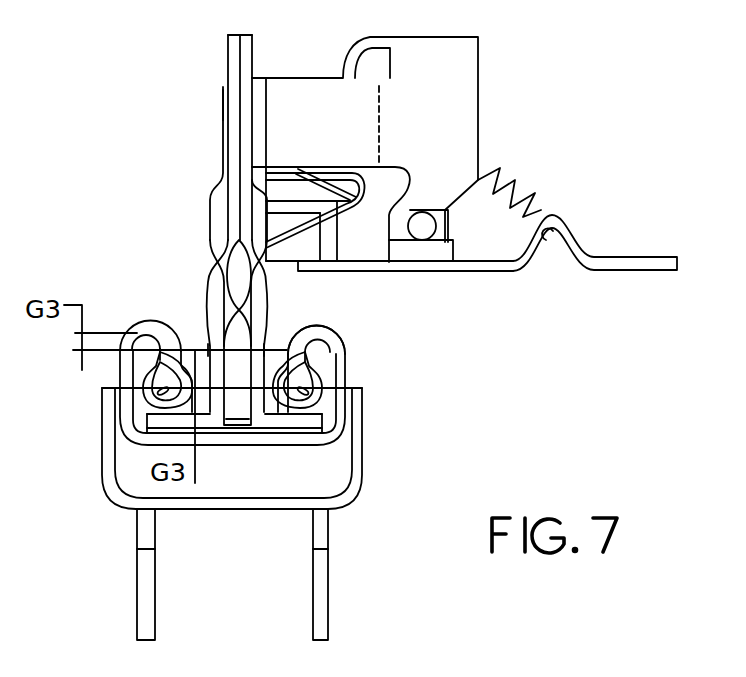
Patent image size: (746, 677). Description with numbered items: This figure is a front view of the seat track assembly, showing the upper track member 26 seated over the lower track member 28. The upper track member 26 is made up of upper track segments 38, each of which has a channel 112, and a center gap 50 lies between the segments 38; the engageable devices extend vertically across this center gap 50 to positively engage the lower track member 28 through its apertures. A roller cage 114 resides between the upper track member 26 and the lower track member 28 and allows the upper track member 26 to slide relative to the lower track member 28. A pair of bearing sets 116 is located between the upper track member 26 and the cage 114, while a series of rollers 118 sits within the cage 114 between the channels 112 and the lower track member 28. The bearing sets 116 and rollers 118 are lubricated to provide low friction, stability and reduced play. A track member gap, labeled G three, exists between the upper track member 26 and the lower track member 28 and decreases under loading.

The upper seat track member 26 is at (253, 34).
The upper track segments 38 is at (243, 57).
The center gap 50 is at (277, 343).
The lower seat track member 28 is at (352, 356).
The channel 112 is at (308, 340).
The roller cage 114 is at (323, 421).
The bearing sets 116 is at (150, 342).
The rollers 118 is at (140, 410).